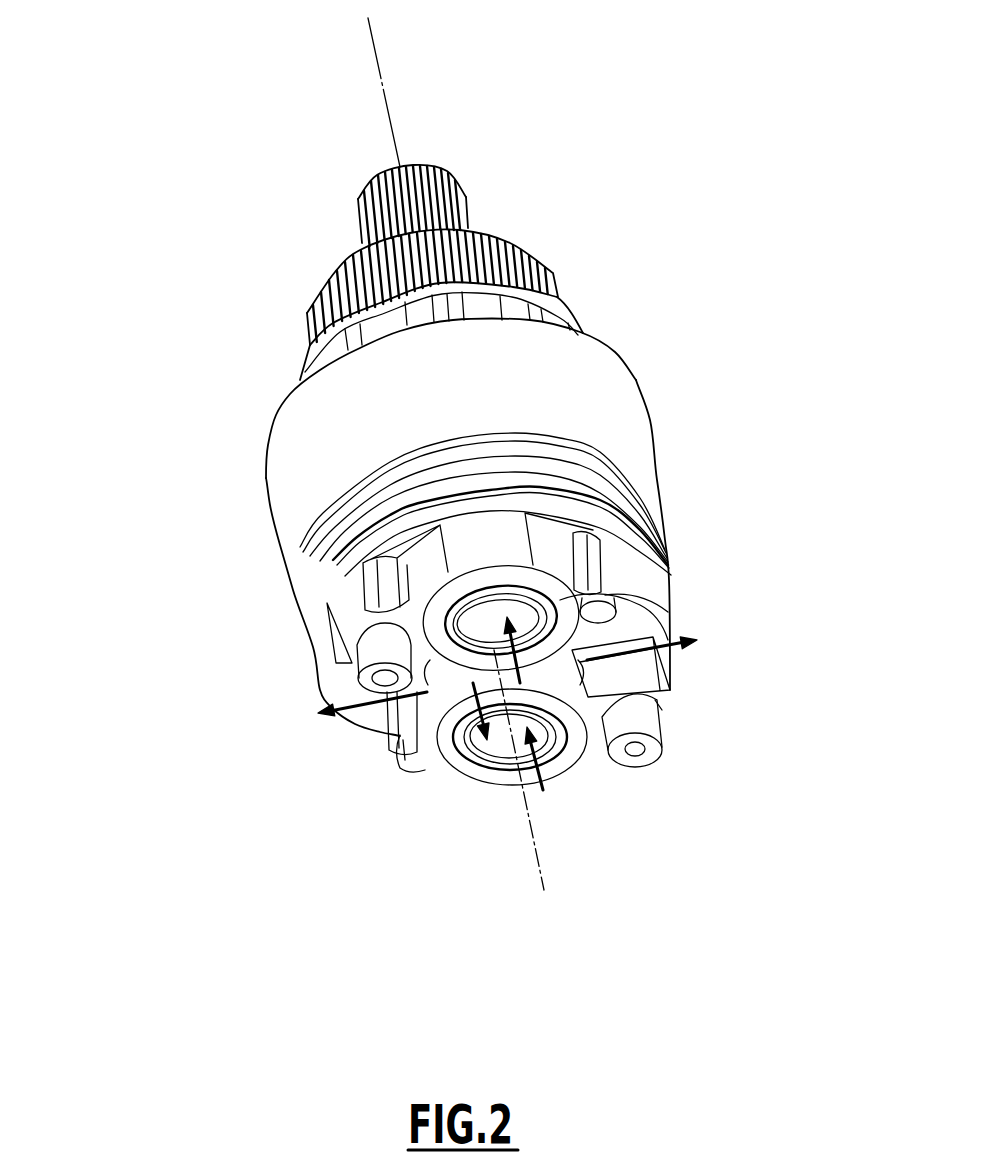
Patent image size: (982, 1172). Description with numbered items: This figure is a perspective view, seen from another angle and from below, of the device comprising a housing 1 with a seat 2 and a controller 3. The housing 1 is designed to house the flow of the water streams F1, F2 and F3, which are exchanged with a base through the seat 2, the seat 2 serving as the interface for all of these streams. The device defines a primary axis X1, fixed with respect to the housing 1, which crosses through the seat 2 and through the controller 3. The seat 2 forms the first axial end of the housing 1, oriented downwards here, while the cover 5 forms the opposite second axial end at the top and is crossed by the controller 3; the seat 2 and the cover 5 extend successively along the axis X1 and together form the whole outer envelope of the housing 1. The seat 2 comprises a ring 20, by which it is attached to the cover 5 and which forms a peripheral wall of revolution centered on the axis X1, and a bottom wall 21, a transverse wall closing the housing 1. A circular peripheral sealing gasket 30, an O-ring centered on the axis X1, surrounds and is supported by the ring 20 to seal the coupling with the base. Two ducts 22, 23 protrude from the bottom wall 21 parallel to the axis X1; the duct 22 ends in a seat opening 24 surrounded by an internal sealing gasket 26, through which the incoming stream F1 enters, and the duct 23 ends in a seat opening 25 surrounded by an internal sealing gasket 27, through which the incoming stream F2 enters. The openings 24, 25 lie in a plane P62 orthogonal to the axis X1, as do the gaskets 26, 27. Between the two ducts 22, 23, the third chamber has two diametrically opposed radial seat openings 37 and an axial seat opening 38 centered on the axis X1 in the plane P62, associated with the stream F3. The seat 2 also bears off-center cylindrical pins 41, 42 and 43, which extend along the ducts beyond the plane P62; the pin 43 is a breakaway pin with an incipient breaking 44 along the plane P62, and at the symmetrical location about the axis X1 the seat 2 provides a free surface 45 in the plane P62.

The housing 1 is at (258, 512).
The seat 2 is at (228, 624).
The controller 3 is at (455, 200).
The cover 5 is at (620, 408).
The ring 20 is at (670, 527).
The bottom wall 21 is at (624, 552).
The duct 22 is at (490, 510).
The duct 23 is at (444, 787).
The seat opening 24 is at (480, 758).
The seat opening 25 is at (478, 625).
The internal sealing gasket 26 is at (423, 632).
The internal sealing gasket 27 is at (505, 768).
The peripheral sealing gasket 30 is at (643, 502).
The radial seat opening 37 is at (358, 682).
The axial seat opening 38 is at (400, 757).
The pin 41 is at (643, 758).
The pin 42 is at (372, 678).
The breakaway pin 43 is at (598, 613).
The incipient breaking 44 is at (603, 597).
The free surface 45 is at (403, 768).
The plane P62 is at (662, 707).
The primary axis X1 is at (525, 787).
The incoming water stream F1 is at (543, 775).
The incoming water stream F2 is at (527, 661).
The water stream F3 is at (503, 699).